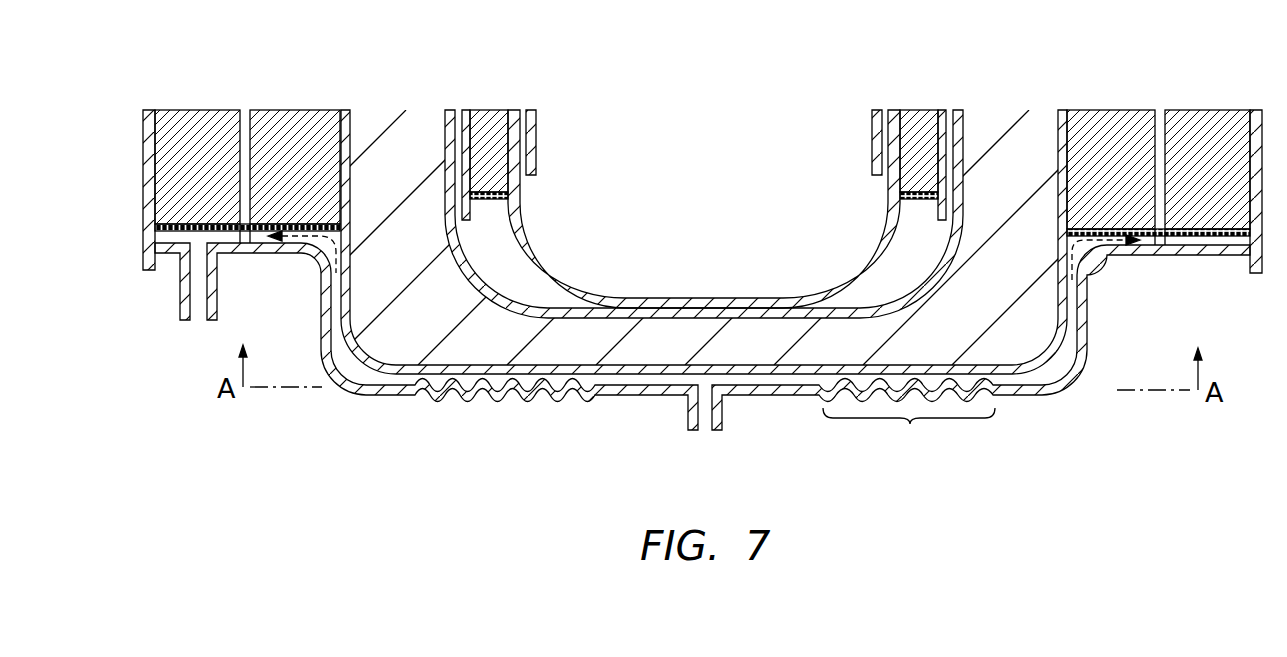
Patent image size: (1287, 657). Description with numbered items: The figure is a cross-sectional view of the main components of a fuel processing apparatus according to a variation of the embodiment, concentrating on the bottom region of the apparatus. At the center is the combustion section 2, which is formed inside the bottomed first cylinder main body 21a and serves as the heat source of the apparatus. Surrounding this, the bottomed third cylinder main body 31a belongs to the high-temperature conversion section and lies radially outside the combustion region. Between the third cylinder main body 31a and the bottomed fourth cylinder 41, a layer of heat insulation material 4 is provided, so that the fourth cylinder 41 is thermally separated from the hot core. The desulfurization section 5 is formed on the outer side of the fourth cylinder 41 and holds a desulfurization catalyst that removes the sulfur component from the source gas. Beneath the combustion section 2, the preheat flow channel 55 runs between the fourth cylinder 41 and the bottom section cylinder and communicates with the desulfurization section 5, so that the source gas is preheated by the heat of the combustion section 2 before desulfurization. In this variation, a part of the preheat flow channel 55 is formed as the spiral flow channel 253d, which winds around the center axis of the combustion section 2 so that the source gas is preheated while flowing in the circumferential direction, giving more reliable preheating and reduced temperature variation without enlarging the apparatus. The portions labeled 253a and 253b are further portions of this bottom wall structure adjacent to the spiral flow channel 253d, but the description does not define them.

The combustion section 2 is at (713, 145).
The heat insulation material 4 is at (1052, 300).
The desulfurization section 5 is at (262, 213).
The first cylinder main body 21a is at (637, 298).
The third cylinder main body 31a is at (775, 308).
The fourth cylinder 41 is at (1060, 355).
The preheat flow channel 55 is at (355, 367).
The upper flange portion 253a is at (1197, 257).
The lower flat portion 253b is at (622, 396).
The spiral flow channel 253d is at (909, 430).